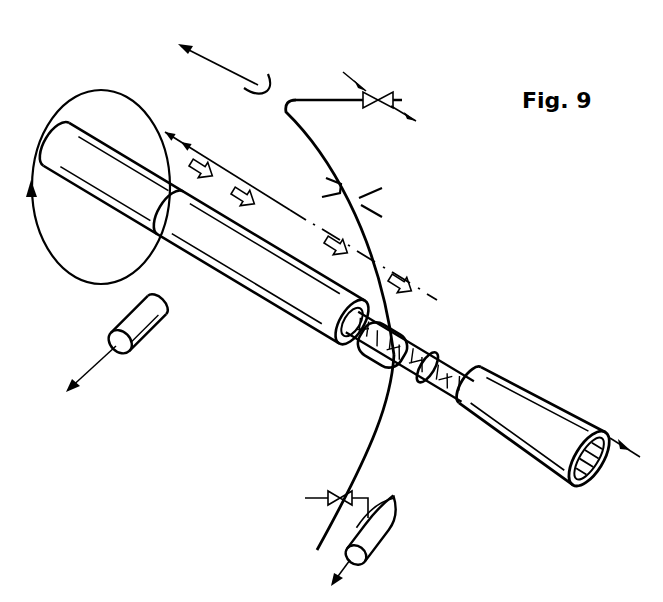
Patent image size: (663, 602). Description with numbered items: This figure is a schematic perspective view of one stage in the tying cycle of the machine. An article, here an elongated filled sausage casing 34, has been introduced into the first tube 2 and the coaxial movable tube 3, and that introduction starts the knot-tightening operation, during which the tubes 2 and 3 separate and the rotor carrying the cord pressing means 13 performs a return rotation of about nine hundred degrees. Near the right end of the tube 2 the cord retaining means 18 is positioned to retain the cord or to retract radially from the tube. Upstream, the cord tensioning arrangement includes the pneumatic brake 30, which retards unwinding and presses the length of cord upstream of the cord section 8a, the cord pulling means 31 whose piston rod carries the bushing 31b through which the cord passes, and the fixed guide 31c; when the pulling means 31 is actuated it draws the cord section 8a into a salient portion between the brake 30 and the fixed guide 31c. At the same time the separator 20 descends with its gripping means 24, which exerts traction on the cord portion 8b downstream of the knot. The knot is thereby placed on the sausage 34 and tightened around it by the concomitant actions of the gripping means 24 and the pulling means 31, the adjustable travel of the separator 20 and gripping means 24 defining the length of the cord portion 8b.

The first tube 2 is at (282, 312).
The movable tube 3 is at (553, 410).
The cord section 8a is at (326, 160).
The cord portion 8b is at (386, 424).
The cord pressing means 13 is at (260, 186).
The cord retaining means 18 is at (148, 333).
The separator 20 is at (383, 540).
The gripping means 24 is at (338, 490).
The pneumatic brake 30 is at (403, 99).
The cord pulling means 31 is at (253, 78).
The bushing 31b is at (273, 82).
The fixed guide 31c is at (362, 193).
The elongated filled sausage casing 34 is at (458, 362).